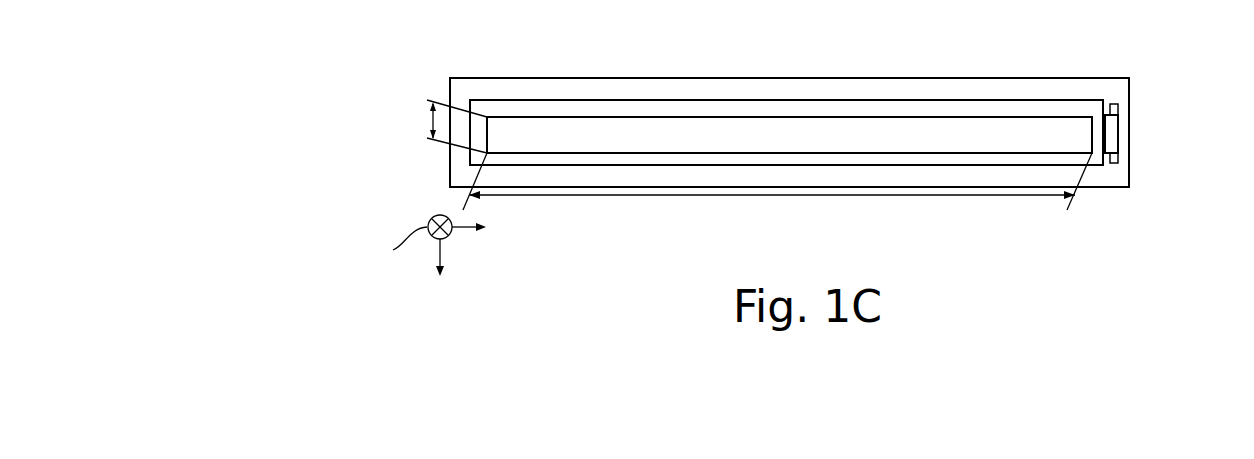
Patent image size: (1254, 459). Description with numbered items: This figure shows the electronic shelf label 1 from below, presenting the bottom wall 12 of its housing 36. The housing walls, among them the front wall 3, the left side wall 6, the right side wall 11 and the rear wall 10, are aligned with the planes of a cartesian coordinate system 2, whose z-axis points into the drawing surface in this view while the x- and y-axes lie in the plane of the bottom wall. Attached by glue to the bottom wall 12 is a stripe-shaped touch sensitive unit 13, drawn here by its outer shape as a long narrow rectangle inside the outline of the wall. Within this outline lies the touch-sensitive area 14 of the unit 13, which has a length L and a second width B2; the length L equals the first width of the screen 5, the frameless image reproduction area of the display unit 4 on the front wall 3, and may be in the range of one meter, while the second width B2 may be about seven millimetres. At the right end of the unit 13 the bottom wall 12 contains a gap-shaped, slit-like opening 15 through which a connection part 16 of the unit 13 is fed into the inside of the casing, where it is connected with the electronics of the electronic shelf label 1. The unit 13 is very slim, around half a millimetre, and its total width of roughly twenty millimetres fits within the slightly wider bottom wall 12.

The electronic shelf label 1 is at (1134, 74).
The cartesian coordinate system 2 is at (516, 246).
The front wall 3 is at (955, 78).
The display unit 4 is at (921, 70).
The screen 5 is at (882, 78).
The left side wall 6 is at (450, 90).
The rear wall 10 is at (460, 188).
The right side wall 11 is at (1130, 98).
The bottom wall 12 is at (624, 90).
The touch sensitive unit 13 is at (814, 88).
The touch-sensitive area 14 is at (1038, 137).
The gap-shaped opening 15 is at (1116, 158).
The connection part 16 is at (1113, 128).
The housing 36 is at (1128, 187).
The second width B2 is at (428, 123).
The length L is at (736, 196).